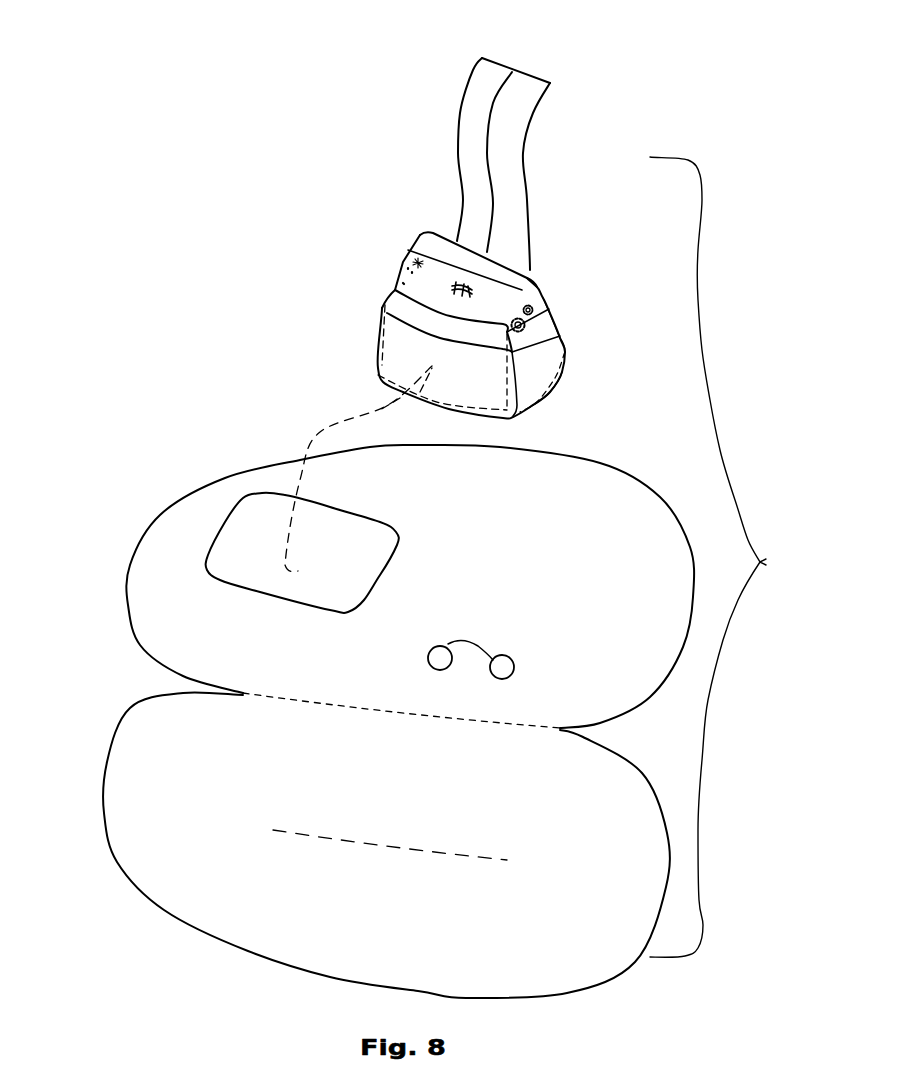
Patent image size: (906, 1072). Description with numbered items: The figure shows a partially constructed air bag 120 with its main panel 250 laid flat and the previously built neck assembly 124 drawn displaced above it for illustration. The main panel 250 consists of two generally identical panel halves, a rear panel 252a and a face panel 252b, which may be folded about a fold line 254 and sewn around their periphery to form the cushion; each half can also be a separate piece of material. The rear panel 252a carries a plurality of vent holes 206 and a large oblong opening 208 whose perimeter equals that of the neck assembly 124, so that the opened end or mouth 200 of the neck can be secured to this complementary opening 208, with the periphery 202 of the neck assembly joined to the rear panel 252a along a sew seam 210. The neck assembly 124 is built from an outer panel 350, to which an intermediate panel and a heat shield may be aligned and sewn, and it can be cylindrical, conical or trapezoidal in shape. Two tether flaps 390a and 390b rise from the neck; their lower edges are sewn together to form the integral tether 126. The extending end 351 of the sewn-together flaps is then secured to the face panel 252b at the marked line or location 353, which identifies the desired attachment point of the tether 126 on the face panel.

The tether 126 is at (501, 148).
The tether flap 390a is at (564, 176).
The tether flap 390b is at (478, 80).
The extending end 351 is at (527, 82).
The neck assembly 124 is at (472, 338).
The seam 210 is at (563, 343).
The outer panel 350 is at (558, 377).
The periphery 202 is at (538, 407).
The mouth 200 is at (456, 385).
The main panel 250 is at (362, 721).
The rear panel 252a is at (637, 596).
The face panel 252b is at (616, 893).
The fold line 254 is at (300, 703).
The oblong opening 208 is at (398, 562).
The vent holes 206 is at (462, 636).
The marked location 353 is at (383, 843).
The air bag 120 is at (730, 557).